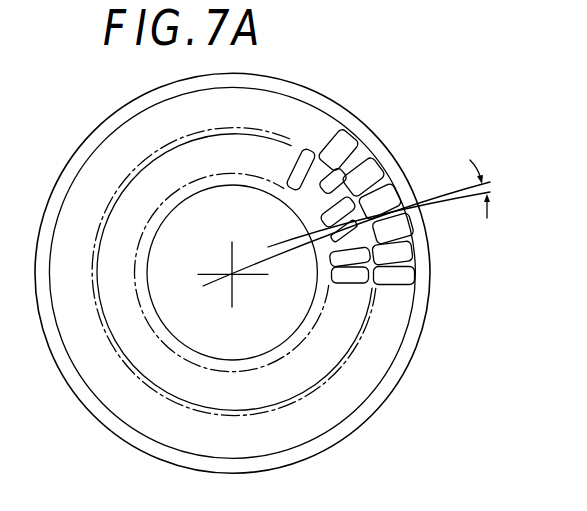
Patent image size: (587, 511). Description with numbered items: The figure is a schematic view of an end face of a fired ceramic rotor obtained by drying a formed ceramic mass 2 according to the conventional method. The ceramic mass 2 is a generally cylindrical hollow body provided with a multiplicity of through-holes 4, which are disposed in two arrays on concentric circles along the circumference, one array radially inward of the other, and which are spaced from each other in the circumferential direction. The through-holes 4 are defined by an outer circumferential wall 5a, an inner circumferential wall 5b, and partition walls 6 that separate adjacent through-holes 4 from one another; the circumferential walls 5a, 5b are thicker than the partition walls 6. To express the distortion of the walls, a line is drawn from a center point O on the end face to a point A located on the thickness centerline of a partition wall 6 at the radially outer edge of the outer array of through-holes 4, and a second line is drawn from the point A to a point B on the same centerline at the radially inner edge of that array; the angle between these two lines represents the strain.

The formed ceramic mass 2 is at (339, 84).
The through-holes 4 is at (357, 148).
The outer circumferential wall 5a is at (418, 314).
The inner circumferential wall 5b is at (308, 320).
The partition walls 6 is at (394, 248).
The point A is at (410, 208).
The point B is at (366, 222).
The center point O is at (233, 274).